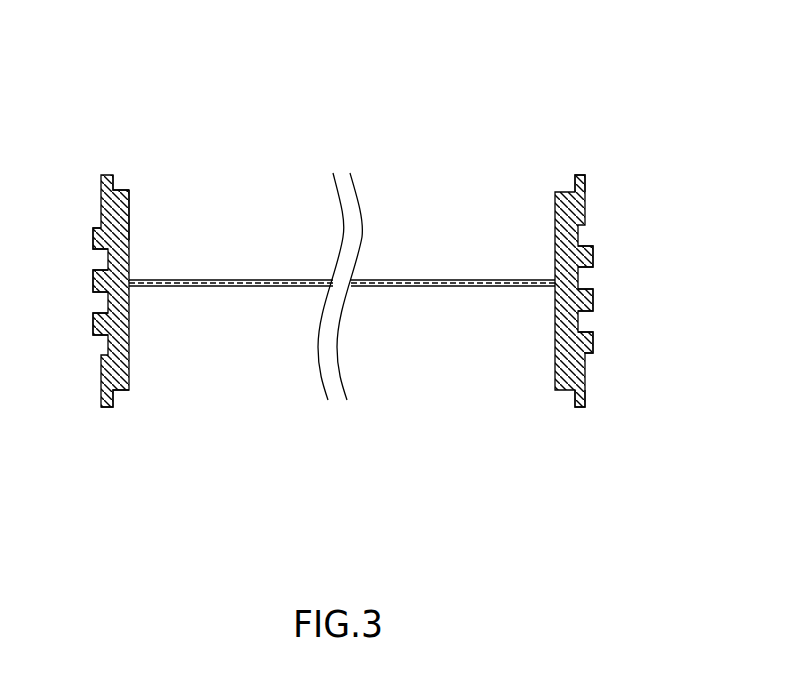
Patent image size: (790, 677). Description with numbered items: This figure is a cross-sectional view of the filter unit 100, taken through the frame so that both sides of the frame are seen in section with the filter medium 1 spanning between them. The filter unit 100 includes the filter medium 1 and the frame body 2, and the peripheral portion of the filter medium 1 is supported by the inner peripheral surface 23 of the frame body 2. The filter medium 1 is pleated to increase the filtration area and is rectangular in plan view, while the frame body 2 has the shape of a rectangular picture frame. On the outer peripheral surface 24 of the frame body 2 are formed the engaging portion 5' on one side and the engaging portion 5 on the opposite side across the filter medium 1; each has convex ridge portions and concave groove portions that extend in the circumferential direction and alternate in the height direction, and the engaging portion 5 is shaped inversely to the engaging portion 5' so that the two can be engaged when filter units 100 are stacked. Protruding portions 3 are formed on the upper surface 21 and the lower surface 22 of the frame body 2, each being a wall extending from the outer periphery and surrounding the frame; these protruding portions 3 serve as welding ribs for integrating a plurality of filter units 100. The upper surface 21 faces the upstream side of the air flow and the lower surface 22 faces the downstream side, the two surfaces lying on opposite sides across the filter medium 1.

The filter unit 100 is at (100, 90).
The filter medium 1 is at (435, 280).
The frame body 2 is at (603, 200).
The protruding portions 3 is at (585, 178).
The engaging portion 5 is at (607, 293).
The engaging portion 5' is at (76, 294).
The upper surface 21 is at (119, 191).
The lower surface 22 is at (117, 392).
The inner peripheral surface 23 is at (129, 217).
The outer peripheral surface 24 is at (101, 208).